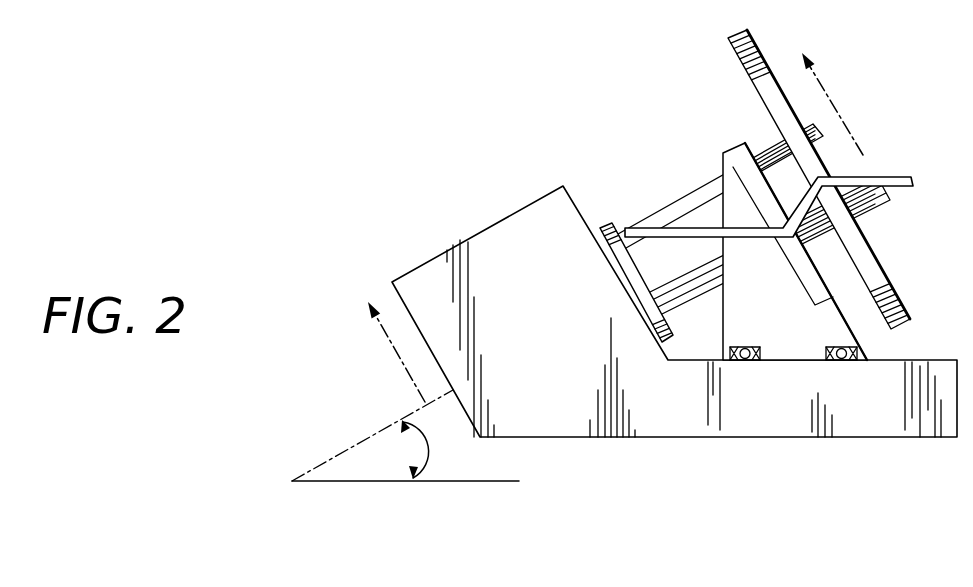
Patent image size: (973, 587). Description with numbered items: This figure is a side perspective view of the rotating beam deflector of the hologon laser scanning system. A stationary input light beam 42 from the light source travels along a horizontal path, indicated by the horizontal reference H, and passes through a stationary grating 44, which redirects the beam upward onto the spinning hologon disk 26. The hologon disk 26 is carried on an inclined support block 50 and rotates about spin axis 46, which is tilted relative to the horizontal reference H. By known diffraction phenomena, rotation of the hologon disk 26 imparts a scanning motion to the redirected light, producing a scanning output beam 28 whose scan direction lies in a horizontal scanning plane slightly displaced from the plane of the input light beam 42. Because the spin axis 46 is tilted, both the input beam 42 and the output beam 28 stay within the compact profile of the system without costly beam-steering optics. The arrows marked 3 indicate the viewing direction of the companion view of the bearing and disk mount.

The hologon disk 26 is at (733, 48).
The scanning output beam 28 is at (885, 175).
The stationary input light beam 42 is at (645, 226).
The stationary grating 44 is at (800, 282).
The spin axis 46 is at (358, 442).
The inclined support block 50 is at (433, 259).
The section line for FIG. 3 is at (604, 211).
The horizontal reference line H is at (519, 481).